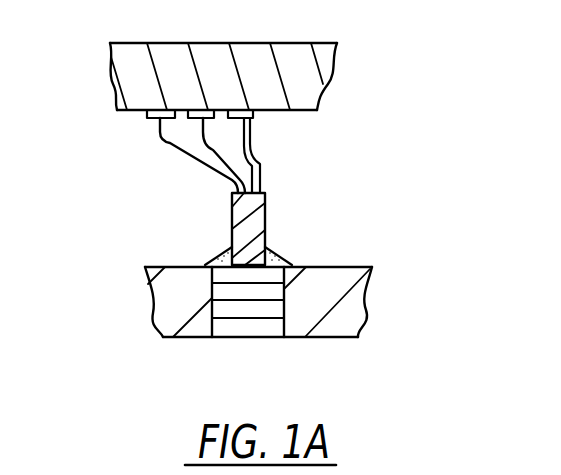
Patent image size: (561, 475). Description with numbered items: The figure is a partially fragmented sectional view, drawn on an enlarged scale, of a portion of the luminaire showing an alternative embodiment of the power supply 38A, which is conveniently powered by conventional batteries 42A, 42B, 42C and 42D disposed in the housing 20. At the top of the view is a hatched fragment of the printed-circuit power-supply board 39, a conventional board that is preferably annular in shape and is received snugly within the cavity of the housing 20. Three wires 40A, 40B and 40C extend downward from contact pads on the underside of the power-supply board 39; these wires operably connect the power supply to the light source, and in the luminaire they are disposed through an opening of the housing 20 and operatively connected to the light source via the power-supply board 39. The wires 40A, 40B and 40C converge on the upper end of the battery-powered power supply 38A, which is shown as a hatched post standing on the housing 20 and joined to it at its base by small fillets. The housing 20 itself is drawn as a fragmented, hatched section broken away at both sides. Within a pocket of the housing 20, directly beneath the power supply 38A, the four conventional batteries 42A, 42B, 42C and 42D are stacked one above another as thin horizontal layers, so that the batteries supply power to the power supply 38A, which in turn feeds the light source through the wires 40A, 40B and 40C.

The printed-circuit power-supply board 39 is at (303, 50).
The wire 40A is at (170, 141).
The wire 40B is at (217, 154).
The wire 40C is at (262, 158).
The power supply 38A is at (306, 198).
The housing 20 is at (343, 270).
The battery 42A is at (212, 277).
The battery 42B is at (212, 293).
The battery 42C is at (233, 315).
The battery 42D is at (257, 332).